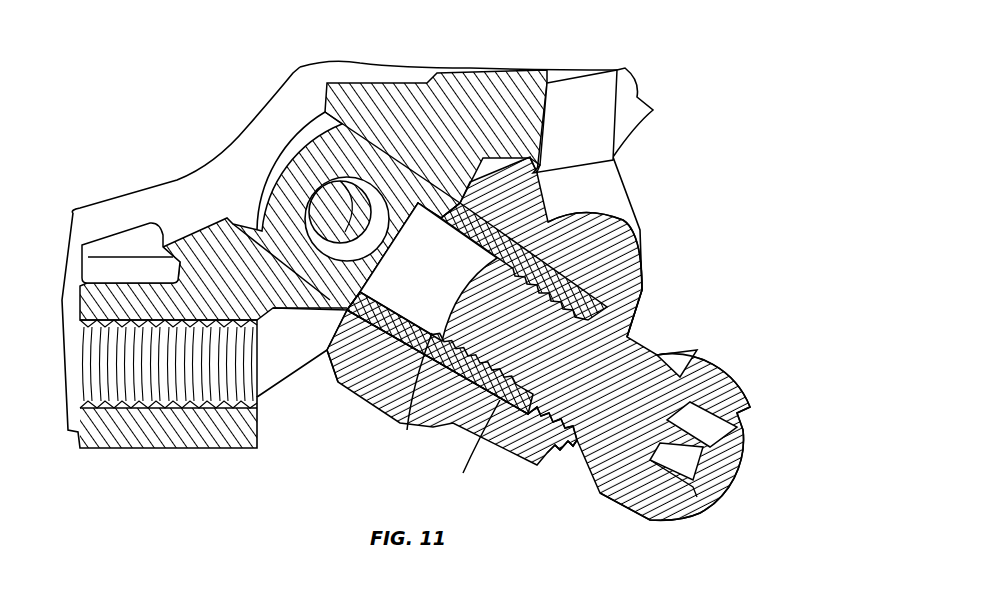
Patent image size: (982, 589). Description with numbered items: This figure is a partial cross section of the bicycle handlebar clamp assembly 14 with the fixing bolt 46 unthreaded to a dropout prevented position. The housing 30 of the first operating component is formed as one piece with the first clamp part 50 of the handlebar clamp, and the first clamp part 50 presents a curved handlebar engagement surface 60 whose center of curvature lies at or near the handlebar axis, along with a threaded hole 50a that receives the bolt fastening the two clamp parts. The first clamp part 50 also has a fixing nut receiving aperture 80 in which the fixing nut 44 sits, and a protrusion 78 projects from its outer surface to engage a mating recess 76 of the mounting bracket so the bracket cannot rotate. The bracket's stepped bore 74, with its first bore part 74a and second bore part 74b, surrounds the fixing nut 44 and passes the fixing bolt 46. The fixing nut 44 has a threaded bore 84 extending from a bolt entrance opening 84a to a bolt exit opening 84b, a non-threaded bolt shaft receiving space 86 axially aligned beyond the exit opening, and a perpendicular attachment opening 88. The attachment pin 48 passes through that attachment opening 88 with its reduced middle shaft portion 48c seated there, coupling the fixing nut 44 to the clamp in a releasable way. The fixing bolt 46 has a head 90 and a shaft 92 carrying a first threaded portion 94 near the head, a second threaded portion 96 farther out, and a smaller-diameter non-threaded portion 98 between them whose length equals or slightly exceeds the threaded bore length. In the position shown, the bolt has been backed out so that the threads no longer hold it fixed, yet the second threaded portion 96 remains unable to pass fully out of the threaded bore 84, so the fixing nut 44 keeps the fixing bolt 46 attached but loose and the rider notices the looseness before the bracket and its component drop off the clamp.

The bicycle handlebar clamp assembly 14 is at (674, 55).
The housing 30 is at (633, 98).
The fixing nut 44 is at (499, 418).
The fixing bolt 46 is at (722, 342).
The attachment pin 48 is at (300, 227).
The middle shaft portion 48c is at (293, 158).
The first clamp part 50 is at (177, 448).
The threaded hole 50a is at (88, 368).
The curved handlebar engagement surface 60 is at (178, 182).
The bore 74 is at (650, 527).
The first bore part 74a is at (573, 446).
The second bore part 74b is at (560, 448).
The recess 76 is at (337, 365).
The protrusion 78 is at (537, 158).
The fixing nut receiving aperture 80 is at (228, 218).
The threaded bore 84 is at (630, 343).
The bolt entrance opening 84a is at (695, 462).
The bolt exit opening 84b is at (535, 232).
The bolt shaft receiving space 86 is at (407, 430).
The attachment opening 88 is at (310, 258).
The head 90 is at (740, 413).
The shaft 92 is at (562, 360).
The first threaded portion 94 is at (642, 335).
The second threaded portion 96 is at (513, 277).
The non-threaded portion 98 is at (463, 473).